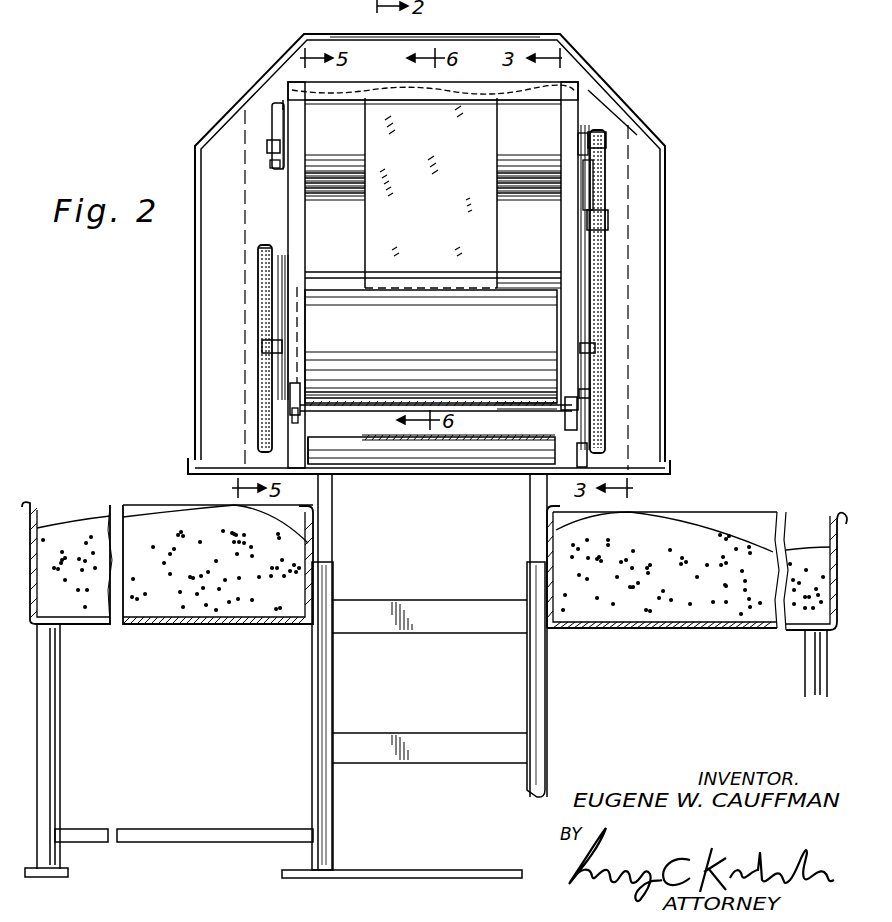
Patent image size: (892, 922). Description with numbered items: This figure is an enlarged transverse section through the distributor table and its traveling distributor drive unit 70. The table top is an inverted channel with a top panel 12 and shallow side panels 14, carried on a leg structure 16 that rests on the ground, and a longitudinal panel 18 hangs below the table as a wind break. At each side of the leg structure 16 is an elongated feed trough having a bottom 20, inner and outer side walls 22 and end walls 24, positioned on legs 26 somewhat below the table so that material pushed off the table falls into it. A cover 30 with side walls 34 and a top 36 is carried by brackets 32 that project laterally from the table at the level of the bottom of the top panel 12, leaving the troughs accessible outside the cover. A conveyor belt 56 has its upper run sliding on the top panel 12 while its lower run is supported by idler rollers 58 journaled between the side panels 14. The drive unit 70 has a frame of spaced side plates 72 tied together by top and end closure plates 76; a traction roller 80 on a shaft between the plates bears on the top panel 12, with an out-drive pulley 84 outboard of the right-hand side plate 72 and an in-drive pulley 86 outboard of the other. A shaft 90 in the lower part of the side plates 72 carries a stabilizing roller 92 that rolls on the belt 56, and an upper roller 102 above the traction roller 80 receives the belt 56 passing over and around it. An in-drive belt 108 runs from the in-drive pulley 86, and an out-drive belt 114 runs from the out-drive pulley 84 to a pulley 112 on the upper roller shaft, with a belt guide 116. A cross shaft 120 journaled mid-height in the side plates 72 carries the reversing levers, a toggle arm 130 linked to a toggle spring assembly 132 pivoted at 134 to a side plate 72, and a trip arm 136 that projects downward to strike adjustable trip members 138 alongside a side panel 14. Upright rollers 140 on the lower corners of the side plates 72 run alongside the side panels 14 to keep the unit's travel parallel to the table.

The top panel 12 is at (522, 408).
The side panels 14 is at (318, 420).
The leg structure 16 is at (322, 573).
The longitudinal panel 18 is at (234, 8).
The bottom 20 is at (193, 623).
The side walls 22 is at (35, 522).
The end walls 24 is at (76, 515).
The legs 26 is at (48, 692).
The cover 30 is at (672, 112).
The brackets 32 is at (212, 474).
The side walls 34 is at (196, 312).
The top 36 is at (489, 36).
The conveyor belt 56 is at (491, 215).
The idler rollers 58 is at (369, 447).
The distributor drive unit 70 is at (590, 85).
The side plates 72 is at (288, 100).
The top and end closure plates 76 is at (360, 92).
The traction roller 80 is at (531, 292).
The out-drive pulley 84 is at (603, 372).
The in-drive pulley 86 is at (258, 328).
The shaft 90 is at (592, 348).
The roller 92 is at (396, 323).
The upper roller 102 is at (548, 152).
The in-drive belt 108 is at (264, 245).
The pulley 112 is at (604, 146).
The out-drive belt 114 is at (604, 174).
The belt guide 116 is at (607, 222).
The cross shaft 120 is at (330, 272).
The toggle arm 130 is at (288, 188).
The toggle spring assembly 132 is at (275, 121).
The pivot 134 is at (283, 113).
The trip arm 136 is at (582, 393).
The trip members 138 is at (588, 466).
The upright rollers 140 is at (292, 405).